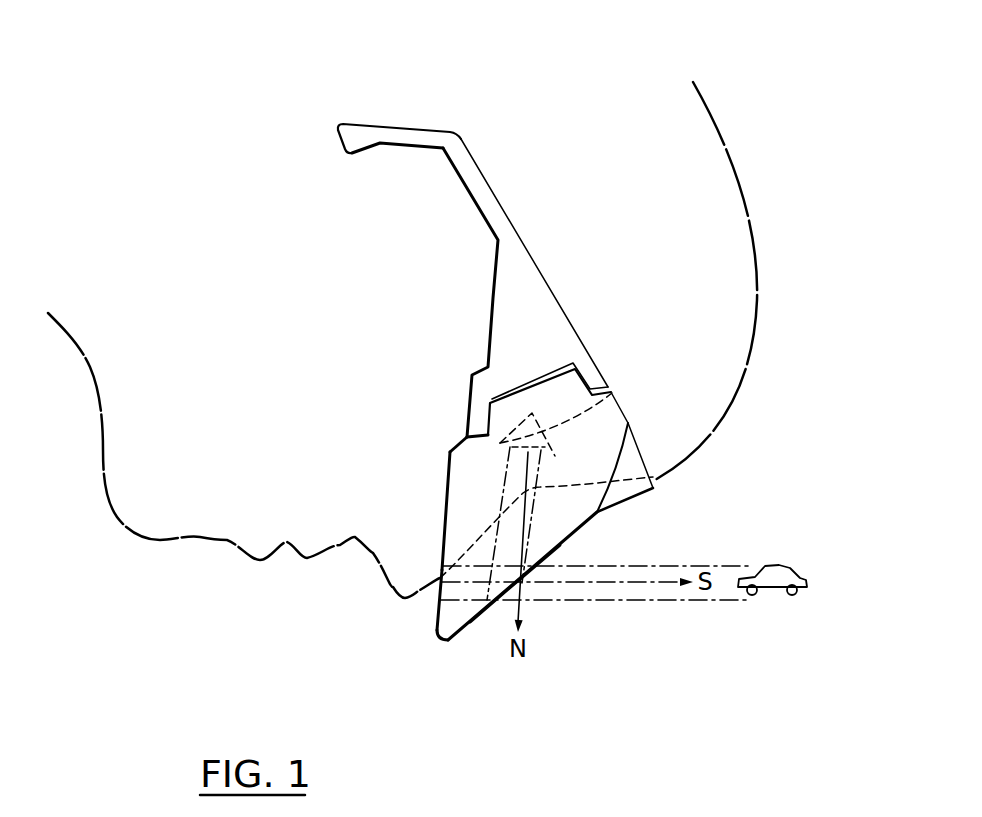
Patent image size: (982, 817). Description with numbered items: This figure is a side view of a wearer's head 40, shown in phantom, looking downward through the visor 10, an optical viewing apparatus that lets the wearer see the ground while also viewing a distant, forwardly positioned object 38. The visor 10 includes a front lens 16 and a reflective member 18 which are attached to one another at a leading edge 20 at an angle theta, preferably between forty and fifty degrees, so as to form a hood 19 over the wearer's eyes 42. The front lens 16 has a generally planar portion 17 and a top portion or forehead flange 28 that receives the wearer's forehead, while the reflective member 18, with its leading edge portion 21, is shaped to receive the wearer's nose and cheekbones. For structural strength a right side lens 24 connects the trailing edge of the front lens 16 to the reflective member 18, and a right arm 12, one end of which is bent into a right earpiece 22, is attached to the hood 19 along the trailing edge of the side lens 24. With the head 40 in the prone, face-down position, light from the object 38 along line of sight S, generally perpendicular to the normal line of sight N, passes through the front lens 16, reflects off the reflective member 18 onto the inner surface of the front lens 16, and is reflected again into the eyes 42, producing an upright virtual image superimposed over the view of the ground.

The visor 10 is at (481, 150).
The right arm 12 is at (532, 285).
The front lens 16 is at (572, 536).
The generally planar portion 17 is at (487, 625).
The reflective member 18 is at (442, 553).
The hood 19 is at (470, 646).
The leading edge 20 is at (443, 641).
The leading edge portion 21 is at (430, 618).
The right earpiece 22 is at (402, 139).
The right side lens 24 is at (460, 463).
The forehead flange 28 is at (648, 497).
The object 38 is at (803, 573).
The wearer's head 40 is at (723, 330).
The wearer's eyes 42 is at (605, 396).